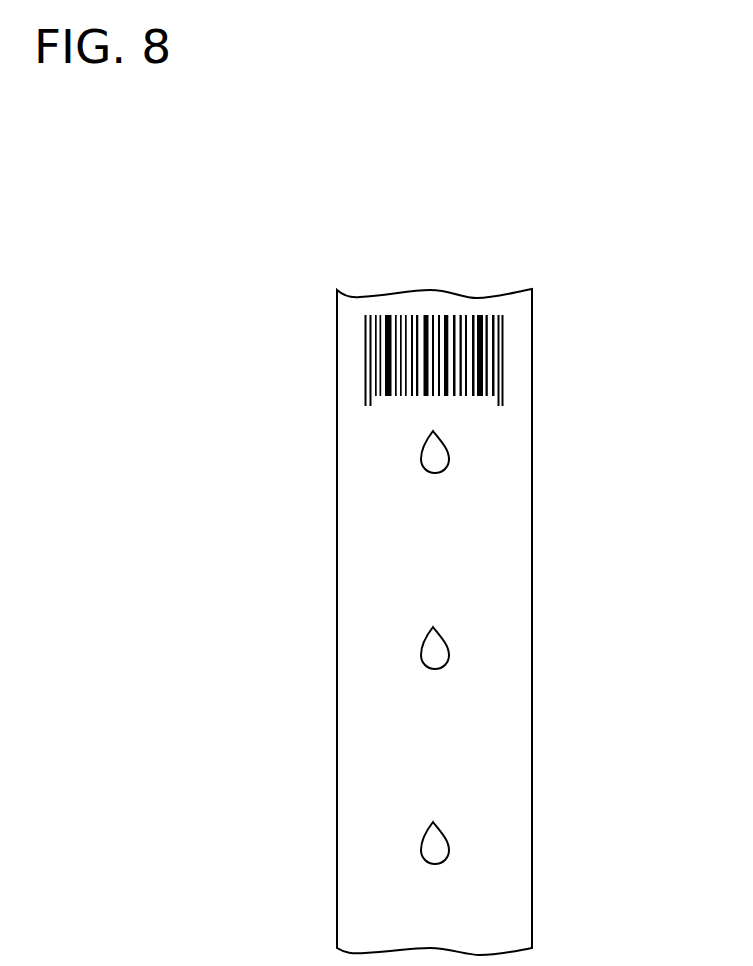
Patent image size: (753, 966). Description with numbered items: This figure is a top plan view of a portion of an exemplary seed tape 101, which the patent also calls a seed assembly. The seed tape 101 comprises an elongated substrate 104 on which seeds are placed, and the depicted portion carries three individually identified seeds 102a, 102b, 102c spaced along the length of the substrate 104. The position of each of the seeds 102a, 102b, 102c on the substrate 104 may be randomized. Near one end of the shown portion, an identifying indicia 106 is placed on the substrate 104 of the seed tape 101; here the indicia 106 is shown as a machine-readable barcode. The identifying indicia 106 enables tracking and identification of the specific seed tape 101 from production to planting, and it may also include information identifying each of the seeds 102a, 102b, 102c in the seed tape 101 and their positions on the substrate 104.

The seed tape 101 is at (536, 199).
The seed 102a is at (449, 453).
The seed 102b is at (448, 648).
The seed 102c is at (448, 845).
The substrate 104 is at (480, 738).
The identifying indicia 106 is at (375, 356).